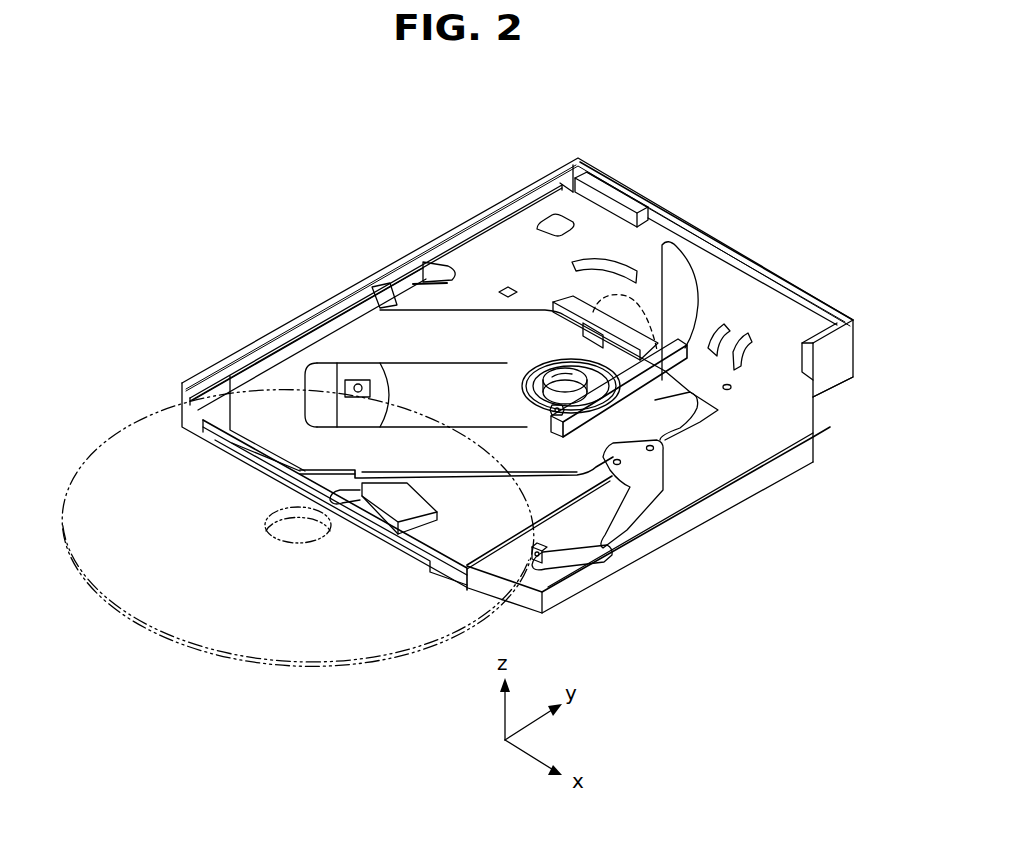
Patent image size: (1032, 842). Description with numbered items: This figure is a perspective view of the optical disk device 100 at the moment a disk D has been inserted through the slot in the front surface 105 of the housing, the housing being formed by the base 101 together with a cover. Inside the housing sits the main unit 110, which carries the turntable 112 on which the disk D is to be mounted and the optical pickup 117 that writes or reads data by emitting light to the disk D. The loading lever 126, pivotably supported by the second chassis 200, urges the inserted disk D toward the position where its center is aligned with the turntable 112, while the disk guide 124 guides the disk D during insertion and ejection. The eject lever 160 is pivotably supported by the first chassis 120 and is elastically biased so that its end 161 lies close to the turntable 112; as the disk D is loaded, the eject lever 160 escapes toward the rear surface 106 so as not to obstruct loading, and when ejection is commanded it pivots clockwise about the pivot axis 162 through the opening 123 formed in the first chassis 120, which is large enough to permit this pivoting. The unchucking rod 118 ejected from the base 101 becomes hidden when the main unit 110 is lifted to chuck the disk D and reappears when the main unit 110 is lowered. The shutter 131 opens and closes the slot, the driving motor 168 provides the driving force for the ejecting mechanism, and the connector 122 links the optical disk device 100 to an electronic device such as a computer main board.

The optical disk device 100 is at (288, 238).
The base 101 is at (828, 388).
The front surface 105 is at (258, 458).
The rear surface 106 is at (795, 292).
The main unit 110 is at (262, 400).
The turntable 112 is at (522, 390).
The optical pickup 117 is at (361, 383).
The unchucking rod 118 is at (566, 343).
The first chassis 120 is at (482, 246).
The connector 122 is at (591, 183).
The opening 123 is at (682, 276).
The disk guide 124 is at (392, 277).
The loading lever 126 is at (665, 502).
The shutter 131 is at (367, 510).
The eject lever 160 is at (609, 404).
The end of the eject lever 161 is at (551, 431).
The pivot axis 162 is at (614, 316).
The driving motor 168 is at (410, 515).
The second chassis 200 is at (563, 501).
The disk D is at (118, 432).